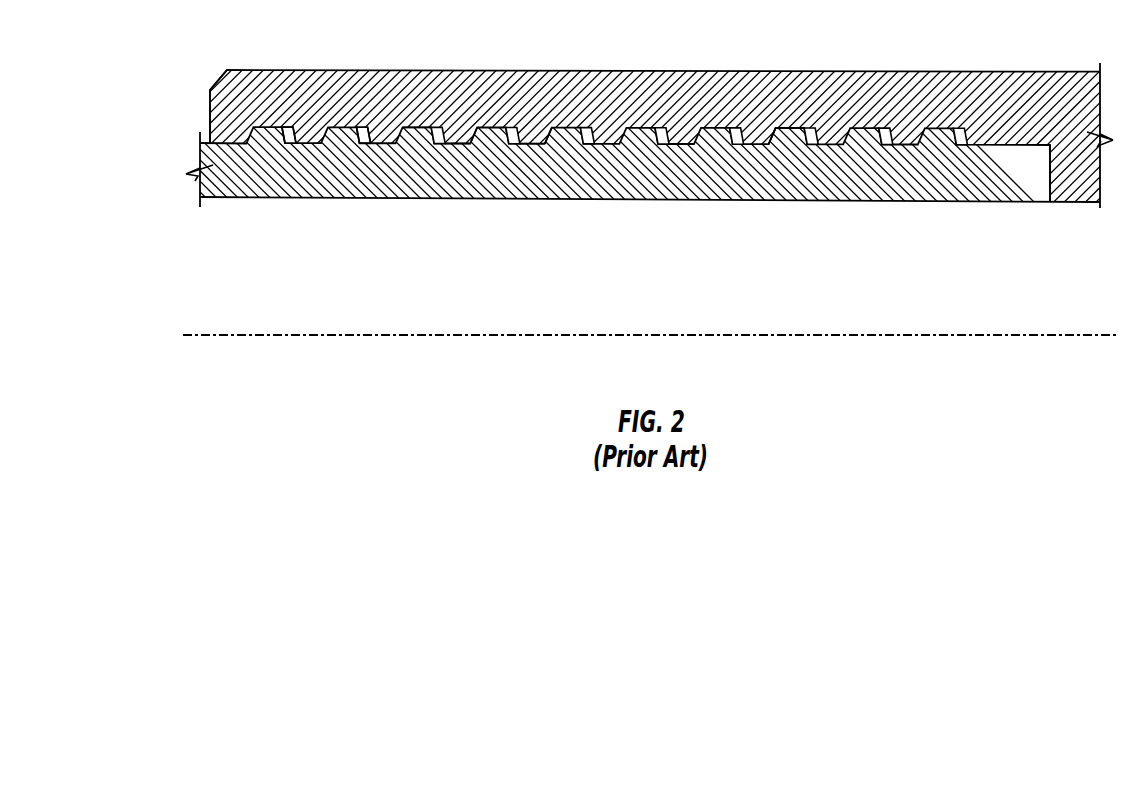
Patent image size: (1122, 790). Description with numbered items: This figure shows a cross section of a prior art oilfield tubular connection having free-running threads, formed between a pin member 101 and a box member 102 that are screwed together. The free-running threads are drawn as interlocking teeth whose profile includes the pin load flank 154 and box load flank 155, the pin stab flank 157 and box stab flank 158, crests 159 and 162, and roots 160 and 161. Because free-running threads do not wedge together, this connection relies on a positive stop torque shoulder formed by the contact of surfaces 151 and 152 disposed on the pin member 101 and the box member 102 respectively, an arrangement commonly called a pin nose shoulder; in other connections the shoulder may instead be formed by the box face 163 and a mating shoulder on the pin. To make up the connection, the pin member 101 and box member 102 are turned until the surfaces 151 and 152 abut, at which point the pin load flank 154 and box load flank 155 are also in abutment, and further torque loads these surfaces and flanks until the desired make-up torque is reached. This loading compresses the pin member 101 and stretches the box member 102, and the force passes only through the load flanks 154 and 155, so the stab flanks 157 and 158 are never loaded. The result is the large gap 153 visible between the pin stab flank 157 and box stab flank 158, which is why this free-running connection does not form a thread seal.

The pin member 101 is at (280, 183).
The box member 102 is at (1048, 118).
The surface 151 is at (1052, 165).
The surface 152 is at (1052, 165).
The gap 153 is at (288, 131).
The pin load flank 154 is at (773, 138).
The box load flank 155 is at (775, 138).
The pin stab flank 157 is at (364, 134).
The box stab flank 158 is at (362, 145).
The crest 159 is at (413, 128).
The root 160 is at (450, 128).
The root 161 is at (546, 134).
The crest 162 is at (527, 146).
The box face 163 is at (210, 110).